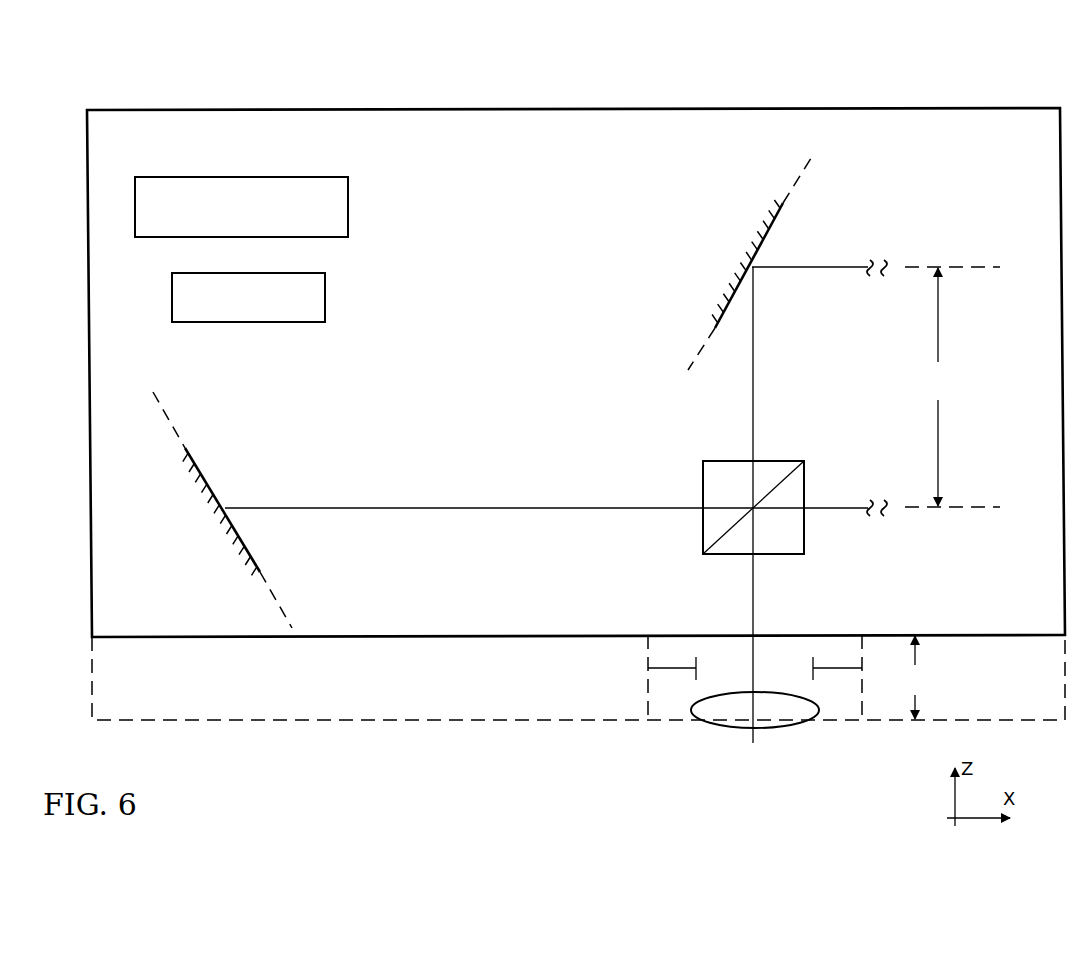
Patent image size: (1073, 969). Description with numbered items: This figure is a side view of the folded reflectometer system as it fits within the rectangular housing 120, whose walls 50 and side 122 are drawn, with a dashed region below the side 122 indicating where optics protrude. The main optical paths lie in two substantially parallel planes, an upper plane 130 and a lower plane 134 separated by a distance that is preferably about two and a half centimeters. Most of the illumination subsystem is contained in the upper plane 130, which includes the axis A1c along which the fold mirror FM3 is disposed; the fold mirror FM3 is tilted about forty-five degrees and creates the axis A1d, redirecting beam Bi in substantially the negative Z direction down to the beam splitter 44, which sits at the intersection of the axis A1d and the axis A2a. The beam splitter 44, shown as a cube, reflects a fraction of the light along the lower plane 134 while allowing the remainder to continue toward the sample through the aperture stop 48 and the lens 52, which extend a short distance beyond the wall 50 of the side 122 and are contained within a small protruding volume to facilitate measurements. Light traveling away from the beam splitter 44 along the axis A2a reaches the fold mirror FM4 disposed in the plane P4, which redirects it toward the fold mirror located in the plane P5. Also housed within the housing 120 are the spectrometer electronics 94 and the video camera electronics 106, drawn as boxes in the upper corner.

The housing 120 is at (868, 107).
The spectrometer electronics 94 is at (227, 218).
The video camera electronics 106 is at (226, 309).
The upper plane 130 is at (970, 266).
The lower plane 134 is at (968, 510).
The beam splitter 44 is at (785, 461).
The aperture stop 48 is at (815, 665).
The wall 50 is at (993, 637).
The lens 52 is at (803, 727).
The side 122 is at (113, 640).
The fold mirror FM3 is at (756, 255).
The fold mirror FM4 is at (203, 478).
The plane P4 is at (171, 421).
The plane P5 is at (685, 381).
The axis A1c is at (808, 266).
The axis A1d is at (753, 364).
The axis A2a is at (282, 508).